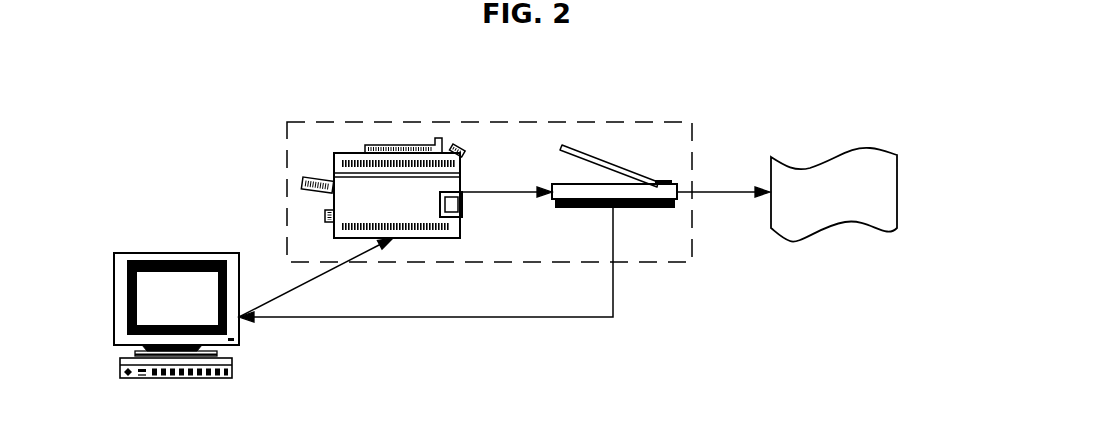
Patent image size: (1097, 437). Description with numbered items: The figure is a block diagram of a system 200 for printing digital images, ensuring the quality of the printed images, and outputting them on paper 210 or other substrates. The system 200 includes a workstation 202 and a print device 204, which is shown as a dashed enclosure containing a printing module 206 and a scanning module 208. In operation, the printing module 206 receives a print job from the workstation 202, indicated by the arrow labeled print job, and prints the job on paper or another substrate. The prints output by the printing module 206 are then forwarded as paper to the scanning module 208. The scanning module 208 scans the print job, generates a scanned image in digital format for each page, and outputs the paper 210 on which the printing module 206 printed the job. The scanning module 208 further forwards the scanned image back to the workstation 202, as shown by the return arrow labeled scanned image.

The system 200 is at (622, 52).
The workstation 202 is at (178, 253).
The print device 204 is at (334, 121).
The printing module 206 is at (334, 174).
The scanning module 208 is at (613, 184).
The paper 210 is at (843, 151).